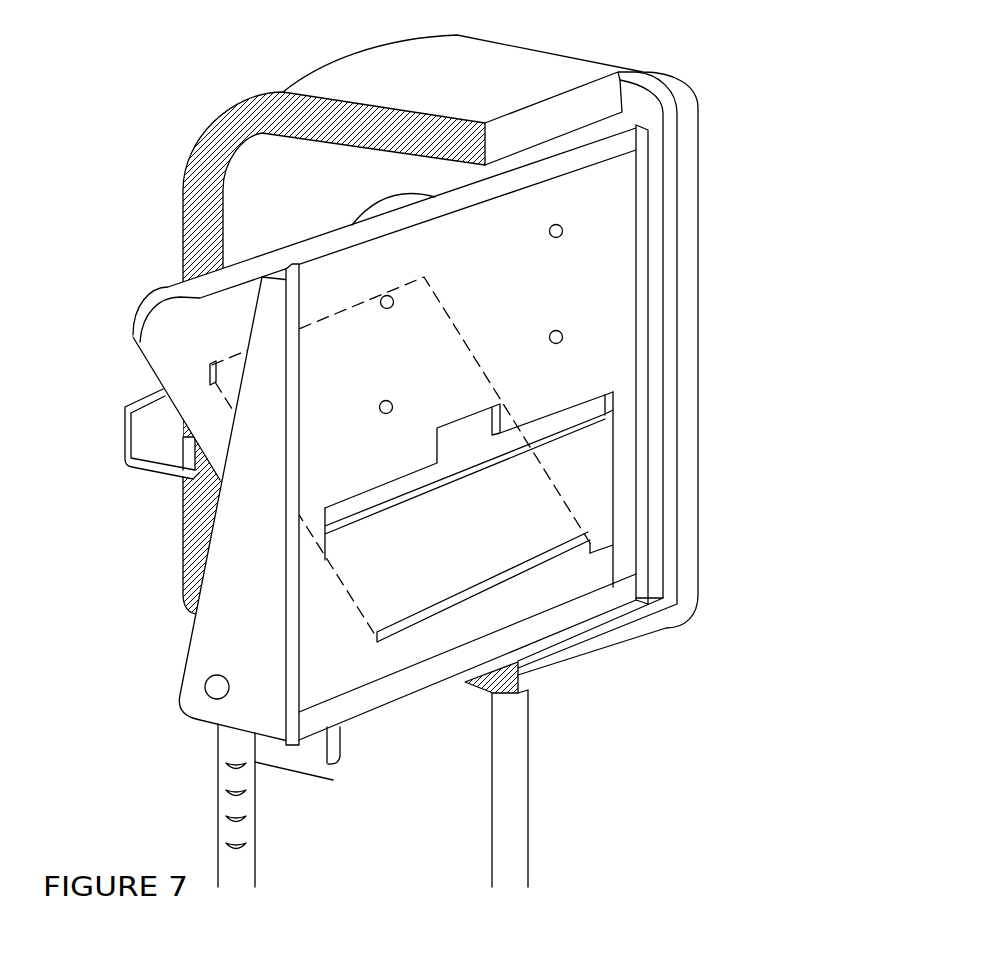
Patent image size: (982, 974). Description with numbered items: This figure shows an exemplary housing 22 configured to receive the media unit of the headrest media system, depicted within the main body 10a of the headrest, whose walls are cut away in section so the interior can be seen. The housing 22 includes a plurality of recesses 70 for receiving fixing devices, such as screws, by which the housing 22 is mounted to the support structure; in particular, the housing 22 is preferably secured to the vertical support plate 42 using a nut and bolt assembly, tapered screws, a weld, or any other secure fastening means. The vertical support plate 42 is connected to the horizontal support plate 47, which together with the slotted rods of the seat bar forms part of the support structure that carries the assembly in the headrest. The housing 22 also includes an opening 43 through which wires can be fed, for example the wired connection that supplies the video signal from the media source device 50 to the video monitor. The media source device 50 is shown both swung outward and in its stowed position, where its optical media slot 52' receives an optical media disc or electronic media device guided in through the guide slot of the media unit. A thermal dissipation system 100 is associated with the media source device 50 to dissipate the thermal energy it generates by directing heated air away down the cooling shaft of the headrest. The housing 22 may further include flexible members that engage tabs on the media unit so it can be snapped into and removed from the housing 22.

The main body 10a is at (513, 52).
The housing 22 is at (292, 640).
The vertical support plate 42 is at (235, 640).
The opening 43 is at (610, 457).
The horizontal support plate 47 is at (312, 760).
The media source device 50 is at (160, 318).
The optical media slot 52' is at (469, 517).
The recesses 70 is at (392, 296).
The thermal dissipation system 100 is at (148, 430).